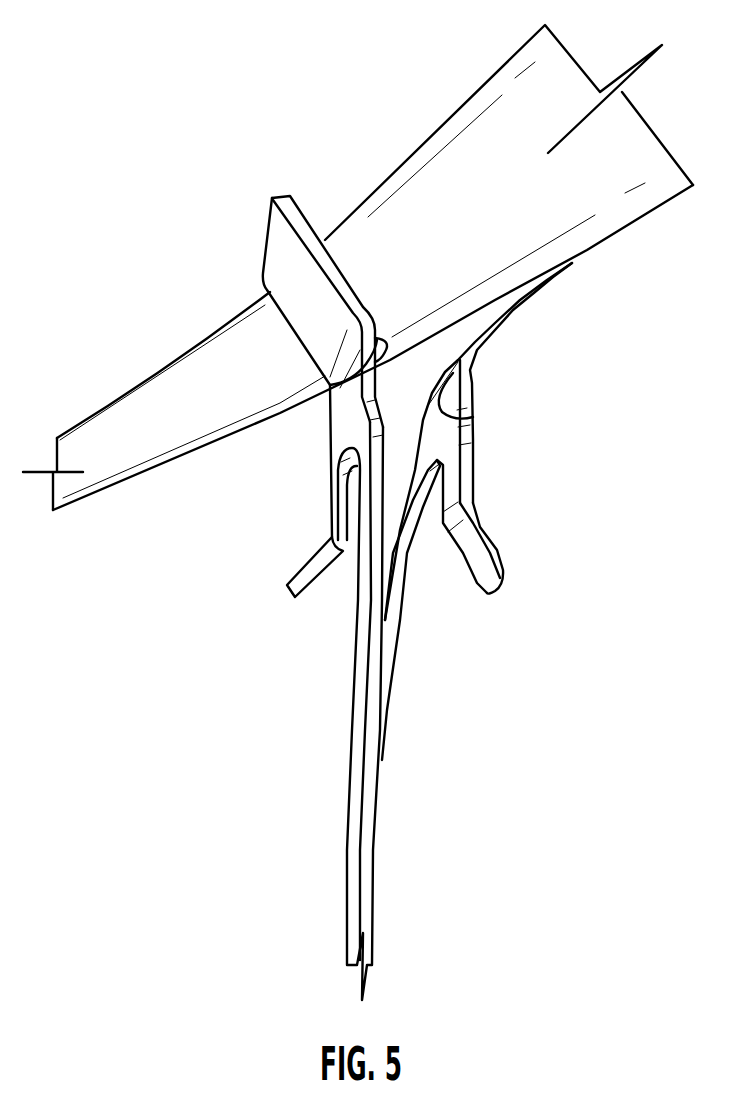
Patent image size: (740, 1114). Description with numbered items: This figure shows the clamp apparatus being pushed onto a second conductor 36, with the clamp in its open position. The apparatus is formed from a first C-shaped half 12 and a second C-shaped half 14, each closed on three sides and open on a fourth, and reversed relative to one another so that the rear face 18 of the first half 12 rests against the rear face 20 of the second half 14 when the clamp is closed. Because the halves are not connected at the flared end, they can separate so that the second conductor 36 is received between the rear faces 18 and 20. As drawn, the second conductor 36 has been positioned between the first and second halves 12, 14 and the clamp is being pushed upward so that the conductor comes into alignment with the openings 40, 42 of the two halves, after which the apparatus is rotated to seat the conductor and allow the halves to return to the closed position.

The first C-shaped half 12 is at (378, 542).
The second C-shaped half 14 is at (468, 448).
The rear face of the first half 18 is at (330, 385).
The rear face of the second half 20 is at (473, 417).
The second conductor 36 is at (583, 227).
The opening of the first half 40 is at (297, 682).
The opening of the second half 42 is at (463, 675).